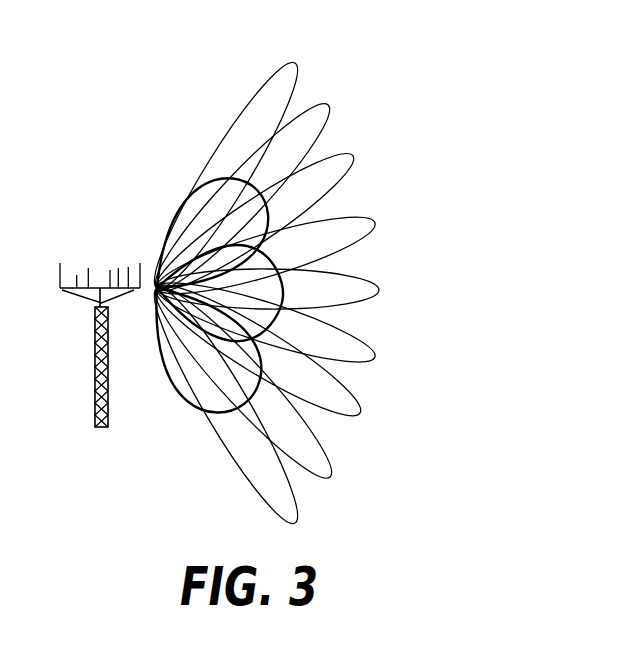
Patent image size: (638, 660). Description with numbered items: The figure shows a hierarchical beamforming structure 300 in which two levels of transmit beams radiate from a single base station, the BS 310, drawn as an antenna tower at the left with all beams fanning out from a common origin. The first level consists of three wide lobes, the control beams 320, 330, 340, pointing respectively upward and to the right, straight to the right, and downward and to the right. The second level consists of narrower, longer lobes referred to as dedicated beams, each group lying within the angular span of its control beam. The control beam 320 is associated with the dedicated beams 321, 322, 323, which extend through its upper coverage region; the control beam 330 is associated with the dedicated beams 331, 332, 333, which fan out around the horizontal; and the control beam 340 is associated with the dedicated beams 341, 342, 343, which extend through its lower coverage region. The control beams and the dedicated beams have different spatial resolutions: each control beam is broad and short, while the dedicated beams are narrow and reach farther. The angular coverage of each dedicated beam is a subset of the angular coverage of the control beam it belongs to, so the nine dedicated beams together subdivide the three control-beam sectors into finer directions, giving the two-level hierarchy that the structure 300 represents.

The hierarchical beamforming structure 300 is at (394, 60).
The BS 310 is at (93, 360).
The control beam 320 is at (222, 176).
The dedicated beam 321 is at (292, 62).
The dedicated beam 322 is at (325, 103).
The dedicated beam 323 is at (350, 156).
The control beam 330 is at (284, 285).
The dedicated beam 331 is at (377, 220).
The dedicated beam 332 is at (381, 291).
The dedicated beam 333 is at (377, 358).
The control beam 340 is at (180, 378).
The dedicated beam 341 is at (357, 405).
The dedicated beam 342 is at (324, 450).
The dedicated beam 343 is at (235, 466).